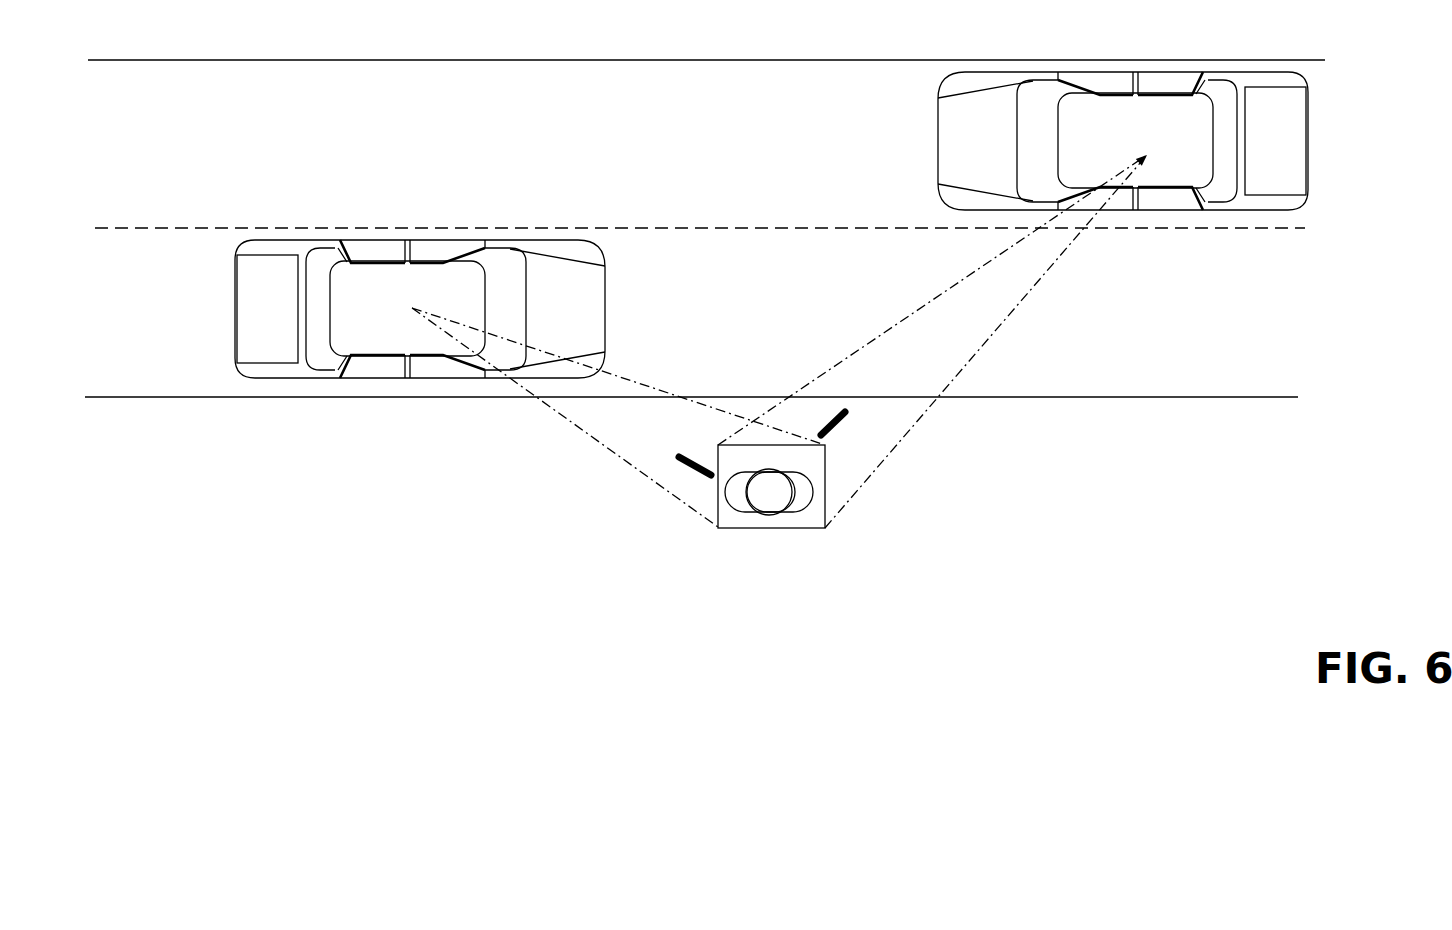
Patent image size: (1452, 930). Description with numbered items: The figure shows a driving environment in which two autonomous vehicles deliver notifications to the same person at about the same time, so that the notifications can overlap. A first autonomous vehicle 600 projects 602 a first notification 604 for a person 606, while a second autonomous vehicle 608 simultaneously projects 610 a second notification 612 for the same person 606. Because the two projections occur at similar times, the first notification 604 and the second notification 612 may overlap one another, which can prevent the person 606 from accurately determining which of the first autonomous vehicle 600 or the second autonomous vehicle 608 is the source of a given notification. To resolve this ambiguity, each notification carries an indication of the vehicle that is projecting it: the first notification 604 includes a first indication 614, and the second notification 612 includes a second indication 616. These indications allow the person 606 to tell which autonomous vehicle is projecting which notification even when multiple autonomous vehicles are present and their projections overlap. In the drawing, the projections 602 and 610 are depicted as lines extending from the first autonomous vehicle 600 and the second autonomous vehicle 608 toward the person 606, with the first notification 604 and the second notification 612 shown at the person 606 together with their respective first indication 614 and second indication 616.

The first autonomous vehicle 600 is at (908, 159).
The projection of the first notification 602 is at (1066, 265).
The first notification 604 is at (805, 531).
The person 606 is at (770, 536).
The second autonomous vehicle 608 is at (208, 340).
The projection of the second notification 610 is at (529, 405).
The second notification 612 is at (740, 531).
The first indication 614 is at (828, 403).
The second indication 616 is at (689, 444).